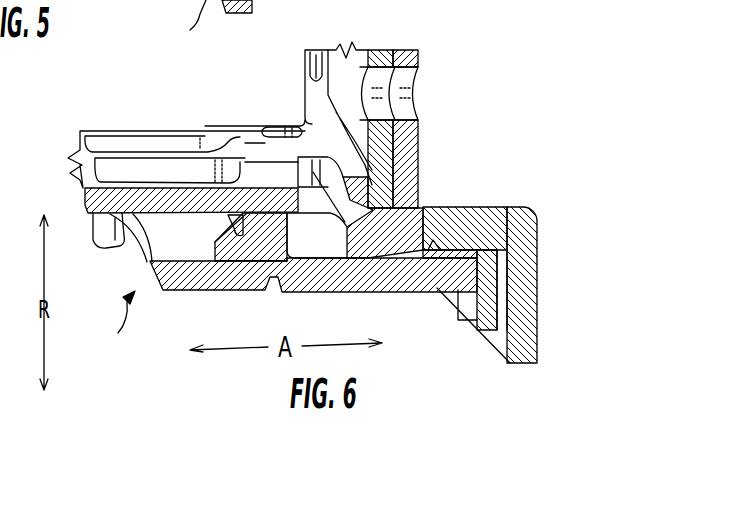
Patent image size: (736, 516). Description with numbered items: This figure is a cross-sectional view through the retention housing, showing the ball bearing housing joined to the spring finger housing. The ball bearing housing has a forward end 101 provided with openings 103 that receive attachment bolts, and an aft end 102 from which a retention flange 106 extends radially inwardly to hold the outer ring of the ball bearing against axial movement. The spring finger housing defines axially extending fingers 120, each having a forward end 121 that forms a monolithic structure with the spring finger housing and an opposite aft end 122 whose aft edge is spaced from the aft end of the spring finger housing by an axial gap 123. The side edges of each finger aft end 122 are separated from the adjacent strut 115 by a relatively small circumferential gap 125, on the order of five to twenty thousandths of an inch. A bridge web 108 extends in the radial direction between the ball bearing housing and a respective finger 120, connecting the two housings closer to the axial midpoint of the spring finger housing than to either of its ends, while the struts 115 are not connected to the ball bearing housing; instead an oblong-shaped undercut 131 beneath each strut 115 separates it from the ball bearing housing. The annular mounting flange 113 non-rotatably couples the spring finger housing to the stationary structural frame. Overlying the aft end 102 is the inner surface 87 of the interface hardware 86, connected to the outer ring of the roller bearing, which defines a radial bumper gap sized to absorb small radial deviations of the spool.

The interface hardware 86 is at (525, 277).
The inner surface 87 is at (480, 250).
The forward end 101 is at (108, 320).
The aft end 102 is at (427, 242).
The opening 103 is at (130, 247).
The retention flange 106 is at (480, 331).
The bridge web 108 is at (277, 243).
The annular mounting flange 113 is at (352, 58).
The strut 115 is at (135, 168).
The finger 120 is at (201, 215).
The forward end 121 is at (69, 172).
The aft end 122 is at (250, 126).
The axial gap 123 is at (265, 170).
The circumferential gap 125 is at (232, 136).
The undercut 131 is at (227, 216).